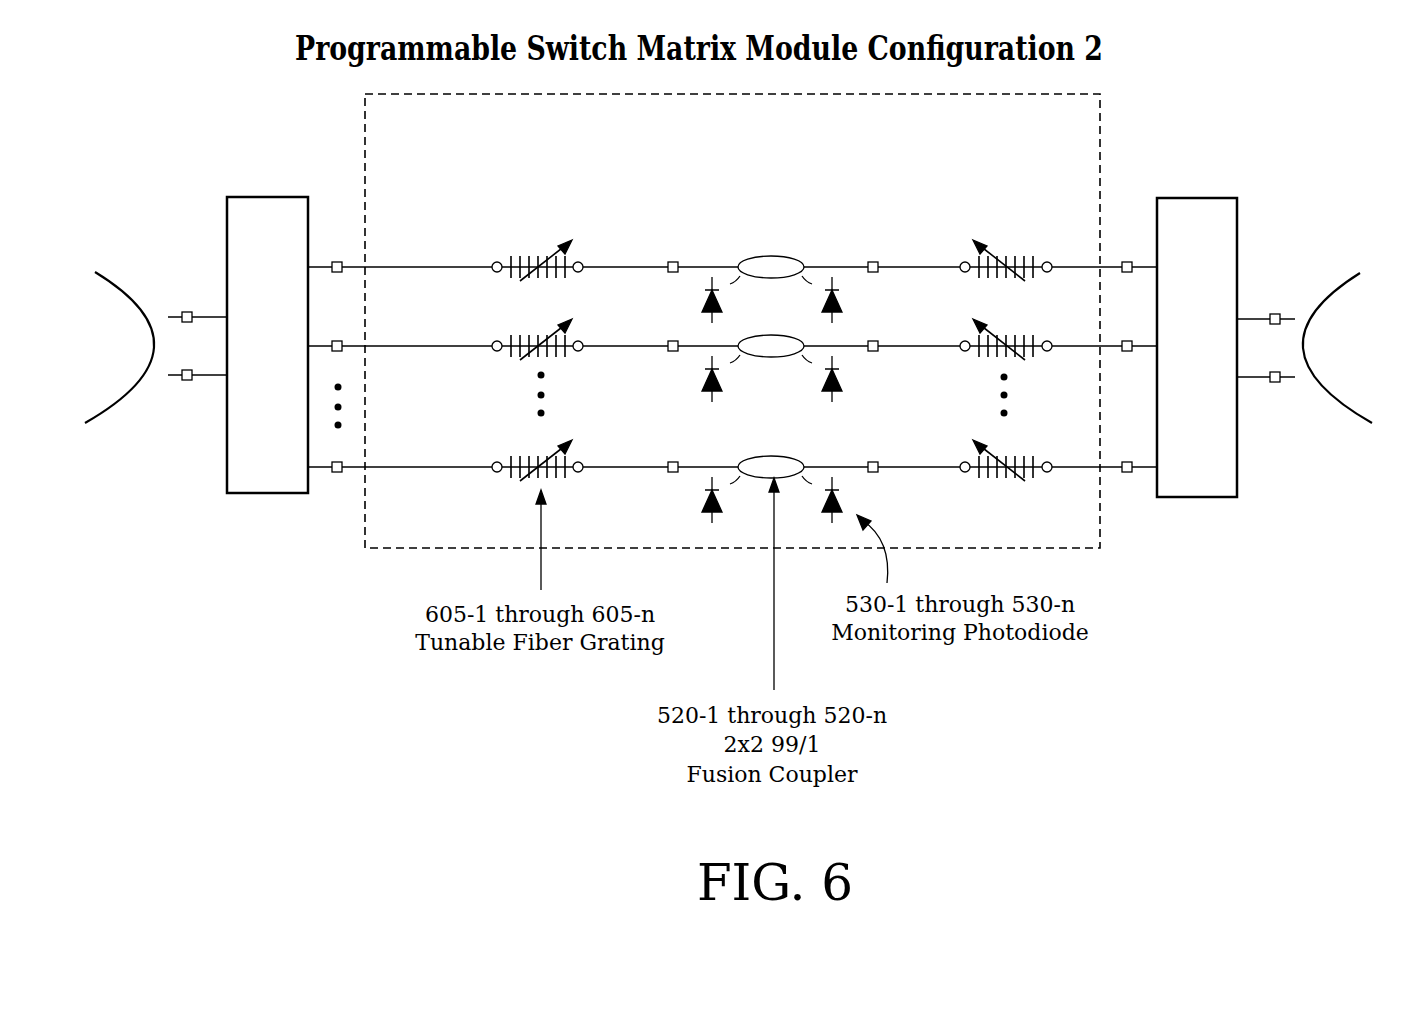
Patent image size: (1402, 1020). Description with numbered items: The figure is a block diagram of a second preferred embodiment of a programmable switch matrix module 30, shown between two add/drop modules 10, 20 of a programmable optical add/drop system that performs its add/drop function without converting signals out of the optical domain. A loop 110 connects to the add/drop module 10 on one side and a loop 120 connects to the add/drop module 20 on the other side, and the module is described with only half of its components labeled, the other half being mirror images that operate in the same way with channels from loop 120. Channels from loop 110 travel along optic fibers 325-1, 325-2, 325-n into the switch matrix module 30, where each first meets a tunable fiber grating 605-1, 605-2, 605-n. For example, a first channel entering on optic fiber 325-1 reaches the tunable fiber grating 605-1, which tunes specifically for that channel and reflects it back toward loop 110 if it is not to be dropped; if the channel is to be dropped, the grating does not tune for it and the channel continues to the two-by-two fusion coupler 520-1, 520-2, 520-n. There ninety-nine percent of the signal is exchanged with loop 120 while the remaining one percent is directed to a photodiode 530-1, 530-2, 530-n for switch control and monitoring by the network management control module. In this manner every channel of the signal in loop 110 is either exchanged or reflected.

The add/drop module 10 is at (272, 497).
The add/drop module 20 is at (1196, 497).
The programmable switch matrix module 30 is at (1100, 172).
The loop 110 is at (109, 387).
The loop 120 is at (1378, 387).
The optic fiber 325-1 is at (342, 272).
The optic fiber 325-2 is at (342, 351).
The optic fiber 325-n is at (342, 472).
The tunable fiber grating 605-1 is at (521, 258).
The tunable fiber grating 605-2 is at (556, 352).
The tunable fiber grating 605-n is at (521, 458).
The 2×2 fusion coupler 520-1 is at (770, 256).
The 2×2 fusion coupler 520-2 is at (770, 357).
The 2×2 fusion coupler 520-n is at (787, 457).
The photodiode 530-1 is at (720, 295).
The photodiode 530-2 is at (706, 381).
The photodiode 530-n is at (702, 503).